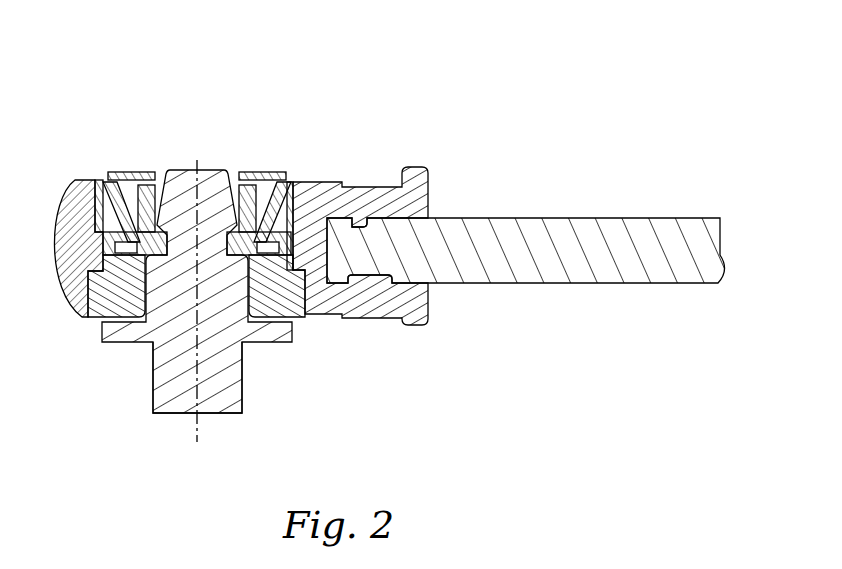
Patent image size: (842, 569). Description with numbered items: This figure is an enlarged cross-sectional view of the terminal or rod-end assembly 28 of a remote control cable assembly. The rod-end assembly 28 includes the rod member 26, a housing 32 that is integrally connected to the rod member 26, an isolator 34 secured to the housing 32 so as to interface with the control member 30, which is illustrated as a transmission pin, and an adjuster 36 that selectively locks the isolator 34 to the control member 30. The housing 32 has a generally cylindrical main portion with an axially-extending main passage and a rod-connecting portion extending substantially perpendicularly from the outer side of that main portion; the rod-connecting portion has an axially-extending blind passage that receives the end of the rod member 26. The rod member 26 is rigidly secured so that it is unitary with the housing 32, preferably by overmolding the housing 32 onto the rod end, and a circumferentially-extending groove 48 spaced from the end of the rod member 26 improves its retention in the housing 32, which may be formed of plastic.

The rod member 26 is at (552, 220).
The terminal or rod-end assembly 28 is at (172, 88).
The control member 30 is at (222, 414).
The housing 32 is at (60, 216).
The isolator 34 is at (90, 320).
The adjuster 36 is at (120, 166).
The circumferentially-extending groove 48 is at (366, 268).